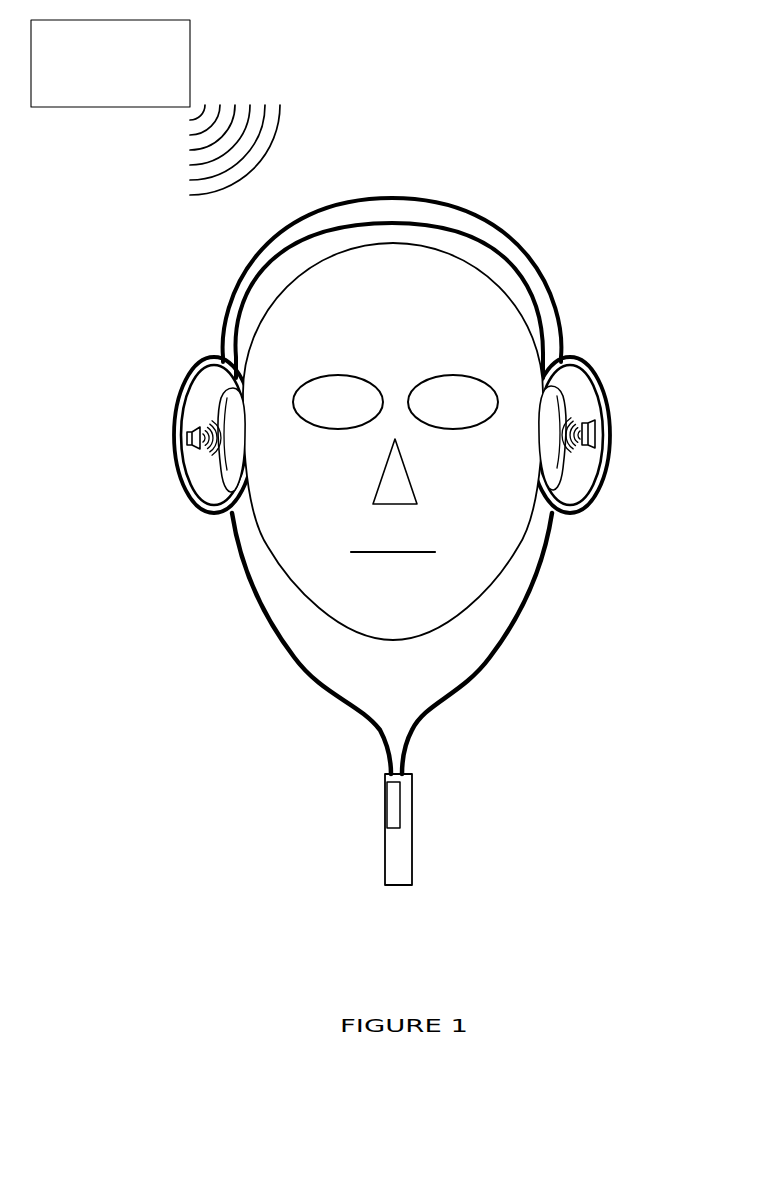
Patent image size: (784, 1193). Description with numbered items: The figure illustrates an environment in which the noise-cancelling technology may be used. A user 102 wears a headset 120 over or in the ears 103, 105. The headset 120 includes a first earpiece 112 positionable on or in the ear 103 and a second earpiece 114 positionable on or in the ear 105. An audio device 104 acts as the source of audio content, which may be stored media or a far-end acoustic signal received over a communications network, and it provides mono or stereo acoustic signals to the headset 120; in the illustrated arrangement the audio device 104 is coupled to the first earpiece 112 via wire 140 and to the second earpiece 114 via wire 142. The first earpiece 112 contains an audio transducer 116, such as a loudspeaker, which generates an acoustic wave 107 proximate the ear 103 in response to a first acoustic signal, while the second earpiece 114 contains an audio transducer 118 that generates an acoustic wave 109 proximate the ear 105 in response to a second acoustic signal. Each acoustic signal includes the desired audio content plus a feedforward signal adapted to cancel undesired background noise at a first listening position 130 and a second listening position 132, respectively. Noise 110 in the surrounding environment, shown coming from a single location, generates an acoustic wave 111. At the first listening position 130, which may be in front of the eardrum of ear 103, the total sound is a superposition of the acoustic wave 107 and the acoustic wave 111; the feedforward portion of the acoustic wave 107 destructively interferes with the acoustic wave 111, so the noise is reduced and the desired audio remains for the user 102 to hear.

The noise 110 is at (110, 63).
The acoustic wave 111 is at (186, 159).
The headset 120 is at (455, 207).
The first earpiece 112 is at (186, 378).
The second earpiece 114 is at (578, 370).
The audio transducer 116 is at (187, 433).
The audio transducer 118 is at (596, 434).
The acoustic wave 107 is at (203, 455).
The acoustic wave 109 is at (583, 451).
The first listening position 130 is at (238, 446).
The second listening position 132 is at (542, 432).
The ear 103 is at (233, 491).
The ear 105 is at (549, 488).
The user 102 is at (393, 641).
The wire 140 is at (278, 633).
The wire 142 is at (487, 660).
The audio device 104 is at (398, 886).